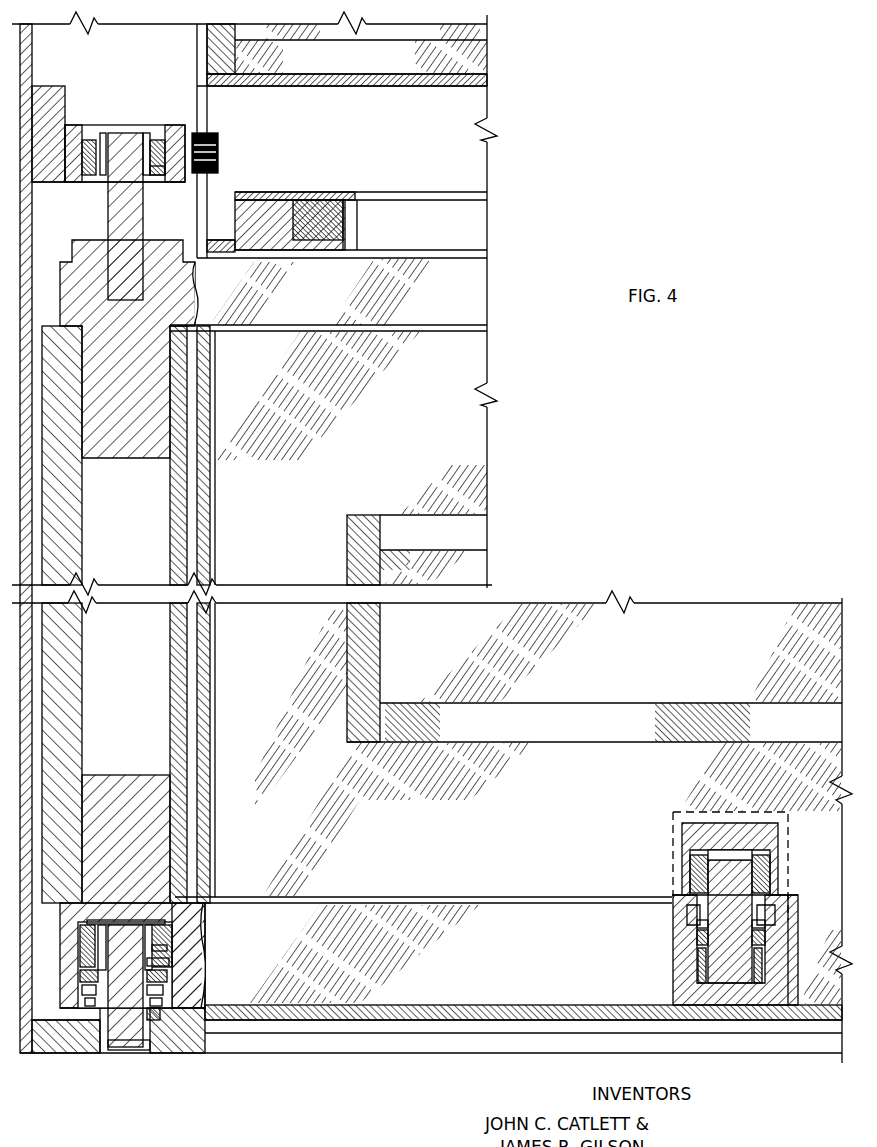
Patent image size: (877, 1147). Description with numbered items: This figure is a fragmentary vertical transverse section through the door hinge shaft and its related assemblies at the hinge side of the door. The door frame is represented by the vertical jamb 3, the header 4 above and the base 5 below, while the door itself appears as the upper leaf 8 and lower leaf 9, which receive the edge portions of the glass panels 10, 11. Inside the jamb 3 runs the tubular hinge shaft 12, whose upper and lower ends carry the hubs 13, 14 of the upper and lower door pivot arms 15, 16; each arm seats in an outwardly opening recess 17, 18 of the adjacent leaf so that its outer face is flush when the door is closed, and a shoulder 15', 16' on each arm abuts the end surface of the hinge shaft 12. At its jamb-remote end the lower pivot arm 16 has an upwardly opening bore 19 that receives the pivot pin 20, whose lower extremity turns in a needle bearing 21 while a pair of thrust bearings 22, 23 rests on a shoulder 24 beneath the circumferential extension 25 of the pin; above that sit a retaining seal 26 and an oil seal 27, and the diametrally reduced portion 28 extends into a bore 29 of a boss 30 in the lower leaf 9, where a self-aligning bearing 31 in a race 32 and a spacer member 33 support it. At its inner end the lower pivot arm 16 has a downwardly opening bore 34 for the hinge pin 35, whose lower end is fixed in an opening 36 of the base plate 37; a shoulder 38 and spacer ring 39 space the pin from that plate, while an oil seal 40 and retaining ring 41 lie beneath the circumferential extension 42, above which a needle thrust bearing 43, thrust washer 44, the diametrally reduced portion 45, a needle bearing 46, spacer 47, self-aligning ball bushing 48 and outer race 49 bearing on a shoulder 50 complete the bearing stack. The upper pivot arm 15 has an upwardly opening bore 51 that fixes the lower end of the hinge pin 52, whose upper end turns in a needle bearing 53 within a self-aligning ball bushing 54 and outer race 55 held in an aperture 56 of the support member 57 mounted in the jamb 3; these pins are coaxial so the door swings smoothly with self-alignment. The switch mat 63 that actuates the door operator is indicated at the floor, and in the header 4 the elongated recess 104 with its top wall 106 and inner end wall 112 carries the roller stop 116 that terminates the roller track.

The vertical jamb 3 is at (32, 215).
The header 4 is at (487, 158).
The base 5 is at (518, 1045).
The upper leaf 8 is at (487, 360).
The lower leaf 9 is at (515, 742).
The glass panel 10 is at (487, 565).
The glass panel 11 is at (537, 603).
The hinge shaft 12 is at (82, 672).
The hub 13 is at (98, 462).
The hub 14 is at (103, 775).
The upper door pivot arm 15 is at (352, 295).
The shoulder 15' is at (211, 455).
The lower door pivot arm 16 is at (431, 1038).
The shoulder 16' is at (213, 753).
The recess 17 is at (487, 258).
The recess 18 is at (378, 900).
The bore 19 is at (765, 980).
The pivot pin 20 is at (737, 990).
The needle bearing 21 is at (768, 985).
The thrust bearing 22 is at (764, 952).
The thrust bearing 23 is at (766, 936).
The shoulder 24 is at (705, 950).
The circumferential extension 25 is at (766, 920).
The retaining seal 26 is at (766, 905).
The oil seal 27 is at (772, 895).
The diametrally reduced portion 28 is at (770, 870).
The bore 29 is at (773, 813).
The boss 30 is at (680, 825).
The self-aligning bearing 31 is at (700, 870).
The race 32 is at (705, 882).
The spacer member 33 is at (690, 898).
The bore 34 is at (185, 900).
The hinge pin 35 is at (127, 1053).
The opening 36 is at (137, 1053).
The base plate 37 is at (100, 1055).
The shoulder 38 is at (182, 1022).
The spacer ring 39 is at (165, 1013).
The oil seal 40 is at (175, 1001).
The retaining ring 41 is at (170, 991).
The circumferential extension 42 is at (168, 978).
The needle thrust bearing 43 is at (165, 964).
The thrust washer 44 is at (162, 950).
The diametrally reduced portion 45 is at (100, 1023).
The needle bearing 46 is at (158, 936).
The spacer 47 is at (160, 926).
The self-aligning ball bushing 48 is at (80, 968).
The outer race 49 is at (82, 940).
The shoulder 50 is at (88, 921).
The bore 51 is at (254, 293).
The hinge pin 52 is at (143, 232).
The needle bearing 53 is at (160, 136).
The self-aligning ball bushing 54 is at (172, 128).
The outer race 55 is at (182, 125).
The aperture 56 is at (155, 172).
The support member 57 is at (45, 86).
The switch mat 63 is at (580, 1015).
The recess 104 is at (487, 222).
The top wall 106 is at (487, 192).
The inner end wall 112 is at (233, 212).
The roller stop 116 is at (357, 227).